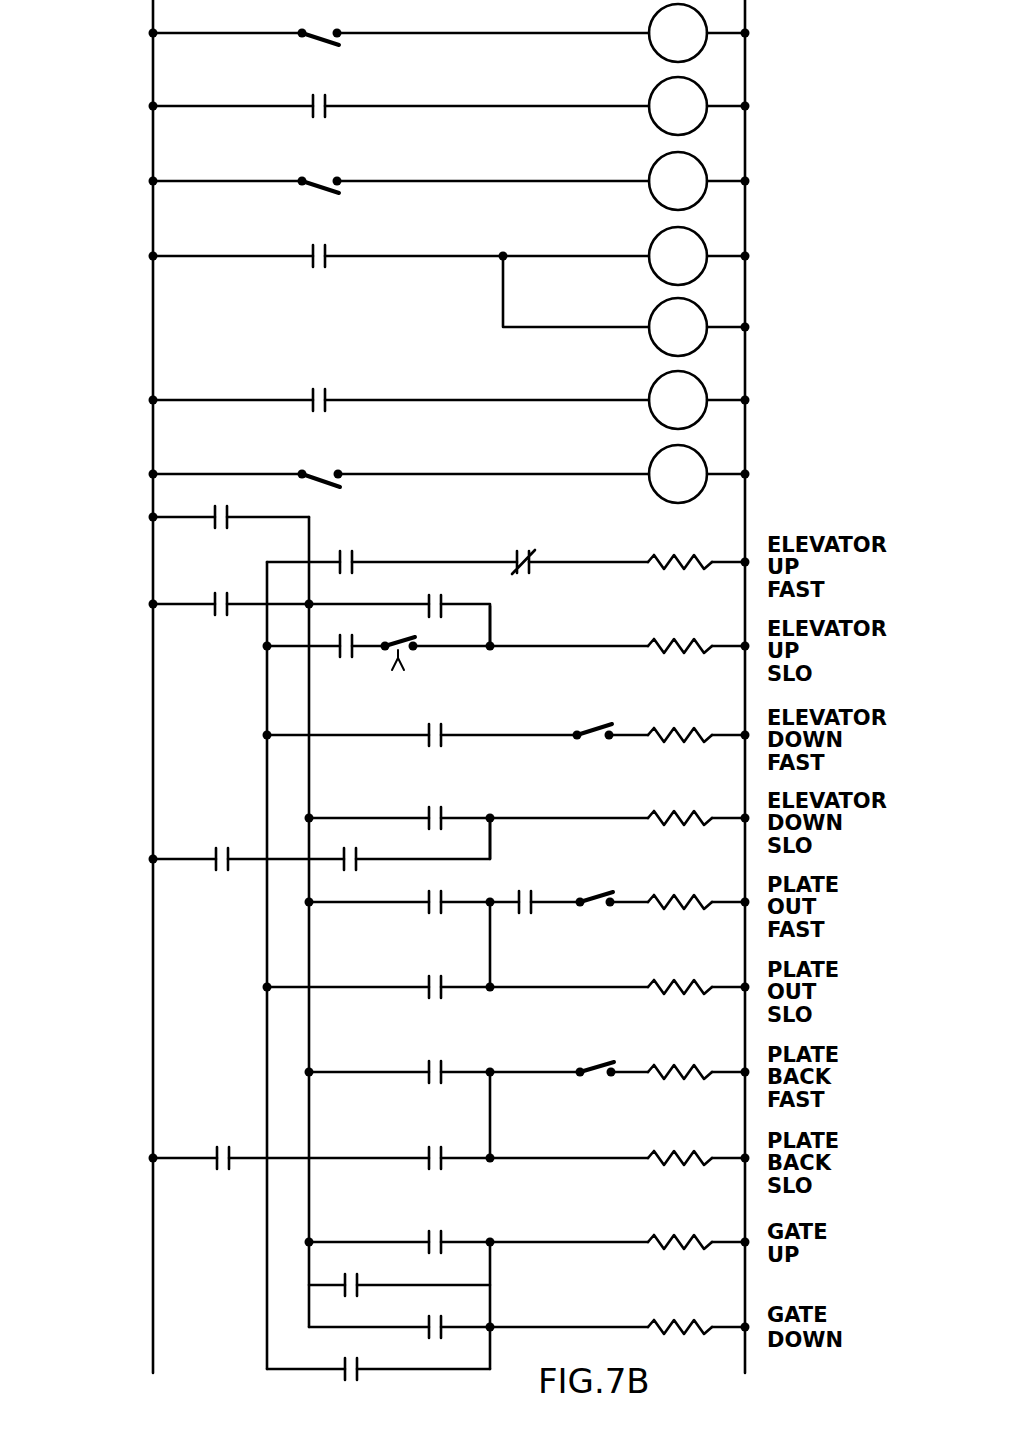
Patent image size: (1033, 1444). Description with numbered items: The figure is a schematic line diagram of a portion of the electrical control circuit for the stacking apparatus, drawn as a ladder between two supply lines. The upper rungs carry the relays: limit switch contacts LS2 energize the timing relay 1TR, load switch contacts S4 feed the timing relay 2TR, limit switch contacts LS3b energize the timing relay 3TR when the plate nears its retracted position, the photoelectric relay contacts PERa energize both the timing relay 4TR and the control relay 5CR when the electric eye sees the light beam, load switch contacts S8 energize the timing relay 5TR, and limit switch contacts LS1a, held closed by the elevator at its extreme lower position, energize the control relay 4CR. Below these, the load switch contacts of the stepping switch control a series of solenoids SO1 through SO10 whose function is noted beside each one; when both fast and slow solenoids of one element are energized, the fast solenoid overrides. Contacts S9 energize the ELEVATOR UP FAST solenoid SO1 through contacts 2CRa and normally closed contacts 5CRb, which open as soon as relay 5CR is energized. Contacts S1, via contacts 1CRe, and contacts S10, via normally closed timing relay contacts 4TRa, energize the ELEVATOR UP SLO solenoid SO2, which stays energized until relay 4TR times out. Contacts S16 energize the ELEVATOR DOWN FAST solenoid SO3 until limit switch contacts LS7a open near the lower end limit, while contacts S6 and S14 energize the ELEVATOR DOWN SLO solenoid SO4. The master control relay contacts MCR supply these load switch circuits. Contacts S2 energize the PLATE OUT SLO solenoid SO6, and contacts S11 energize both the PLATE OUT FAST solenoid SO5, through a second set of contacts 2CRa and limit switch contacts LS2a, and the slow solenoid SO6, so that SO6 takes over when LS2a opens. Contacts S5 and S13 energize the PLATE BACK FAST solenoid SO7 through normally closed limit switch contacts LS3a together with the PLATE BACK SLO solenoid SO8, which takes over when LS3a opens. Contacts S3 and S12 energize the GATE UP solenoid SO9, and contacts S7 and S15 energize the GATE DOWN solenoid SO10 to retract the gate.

The timing relay 1TR is at (678, 33).
The timing relay 2TR is at (678, 106).
The timing relay 3TR is at (678, 181).
The timing relay 4TR is at (678, 256).
The control relay 5CR is at (678, 327).
The timing relay 5TR is at (678, 400).
The control relay 4CR is at (678, 474).
The limit switch contacts LS2 is at (326, 46).
The load switch contacts S4 is at (320, 93).
The limit switch contacts LS3b is at (320, 177).
The photoelectric relay contacts PERa is at (320, 243).
The load switch contacts S8 is at (320, 387).
The limit switch contacts LS1a is at (316, 486).
The relay contacts 1CRe is at (216, 505).
The load switch contacts S9 is at (340, 550).
The normally closed relay contacts 5CRb is at (520, 551).
The relay contacts 2CRa is at (216, 592).
The load switch contacts S1 is at (432, 594).
The load switch contacts S10 is at (342, 634).
The timing relay contacts 4TRa is at (398, 640).
The load switch contacts S16 is at (432, 723).
The limit switch contacts LS7a is at (586, 726).
The load switch contacts S6 is at (432, 806).
The master control relay contacts MCR is at (216, 844).
The load switch contacts S14 is at (343, 848).
The load switch contacts S2 is at (430, 888).
The limit switch contacts LS2a is at (590, 892).
The load switch contacts S11 is at (430, 974).
The load switch contacts S5 is at (430, 1058).
The limit switch contacts LS3a is at (588, 1068).
The load switch contacts S13 is at (430, 1146).
The load switch contacts S3 is at (430, 1228).
The load switch contacts S12 is at (344, 1274).
The load switch contacts S7 is at (430, 1316).
The load switch contacts S15 is at (346, 1360).
The ELEVATOR UP FAST solenoid SO1 is at (682, 555).
The ELEVATOR UP SLO solenoid SO2 is at (682, 639).
The ELEVATOR DOWN FAST solenoid SO3 is at (682, 726).
The ELEVATOR DOWN SLO solenoid SO4 is at (682, 810).
The PLATE OUT FAST solenoid SO5 is at (682, 894).
The PLATE OUT SLO solenoid SO6 is at (682, 979).
The PLATE BACK FAST solenoid SO7 is at (682, 1064).
The PLATE BACK SLO solenoid SO8 is at (682, 1150).
The GATE UP solenoid SO9 is at (682, 1234).
The GATE DOWN solenoid SO10 is at (682, 1318).